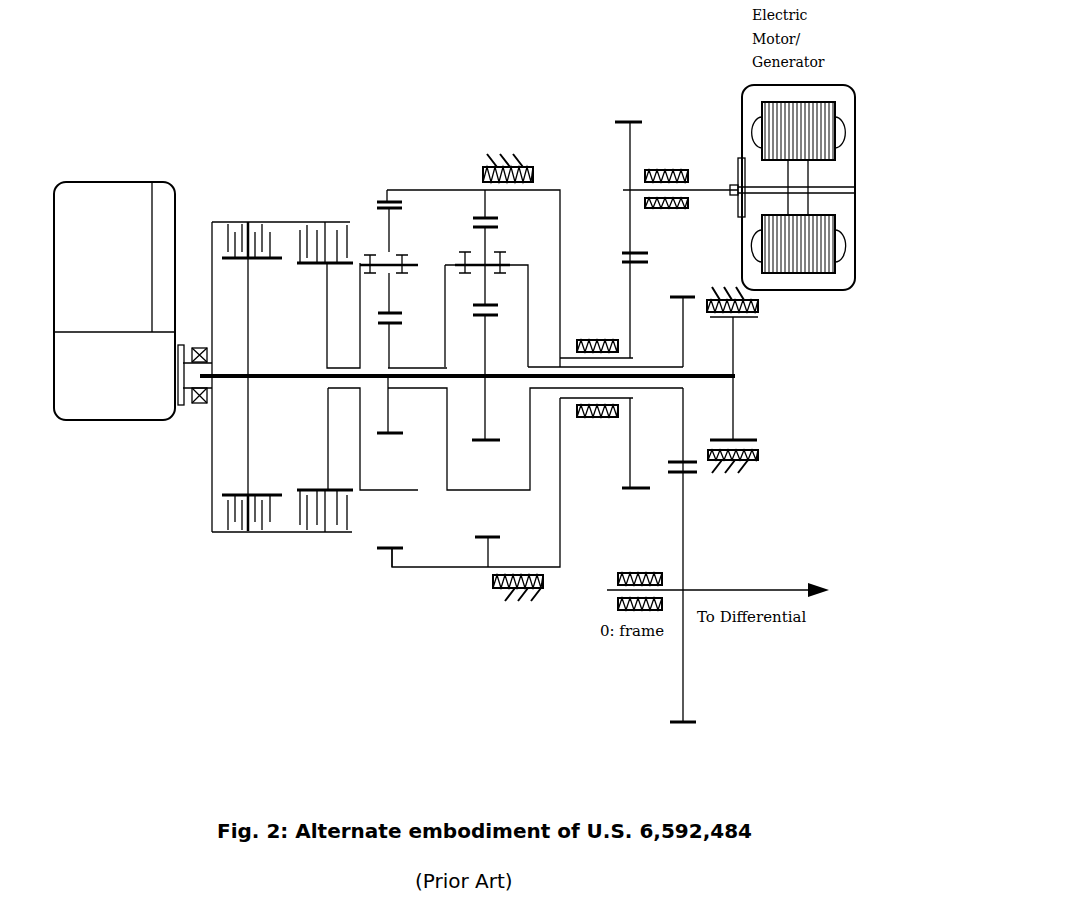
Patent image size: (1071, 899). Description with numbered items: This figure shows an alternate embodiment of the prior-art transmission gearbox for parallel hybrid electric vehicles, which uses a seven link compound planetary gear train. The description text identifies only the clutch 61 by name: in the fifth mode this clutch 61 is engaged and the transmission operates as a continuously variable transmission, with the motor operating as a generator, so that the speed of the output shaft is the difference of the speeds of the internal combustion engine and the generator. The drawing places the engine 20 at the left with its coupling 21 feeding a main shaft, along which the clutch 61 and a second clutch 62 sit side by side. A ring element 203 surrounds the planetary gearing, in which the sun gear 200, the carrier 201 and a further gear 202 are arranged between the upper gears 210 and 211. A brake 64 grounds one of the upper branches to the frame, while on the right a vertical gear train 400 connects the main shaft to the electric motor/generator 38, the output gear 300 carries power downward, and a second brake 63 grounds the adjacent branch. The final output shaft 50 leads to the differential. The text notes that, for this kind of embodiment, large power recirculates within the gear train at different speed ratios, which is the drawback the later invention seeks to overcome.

The engine 20 is at (75, 421).
The engine output coupling 21 is at (179, 405).
The clutch 61 is at (248, 222).
The second clutch 62 is at (324, 224).
The ring gear 203 is at (327, 331).
The gear 210 is at (389, 201).
The gear 211 is at (485, 216).
The planet carrier 201 is at (444, 266).
The sun gear 200 is at (396, 325).
The gear 202 is at (488, 322).
The brake 64 is at (520, 166).
The motor shaft gear 400 is at (628, 106).
The output gear 300 is at (680, 274).
The brake 63 is at (760, 453).
The electric motor/generator 38 is at (857, 176).
The output shaft to differential 50 is at (735, 587).